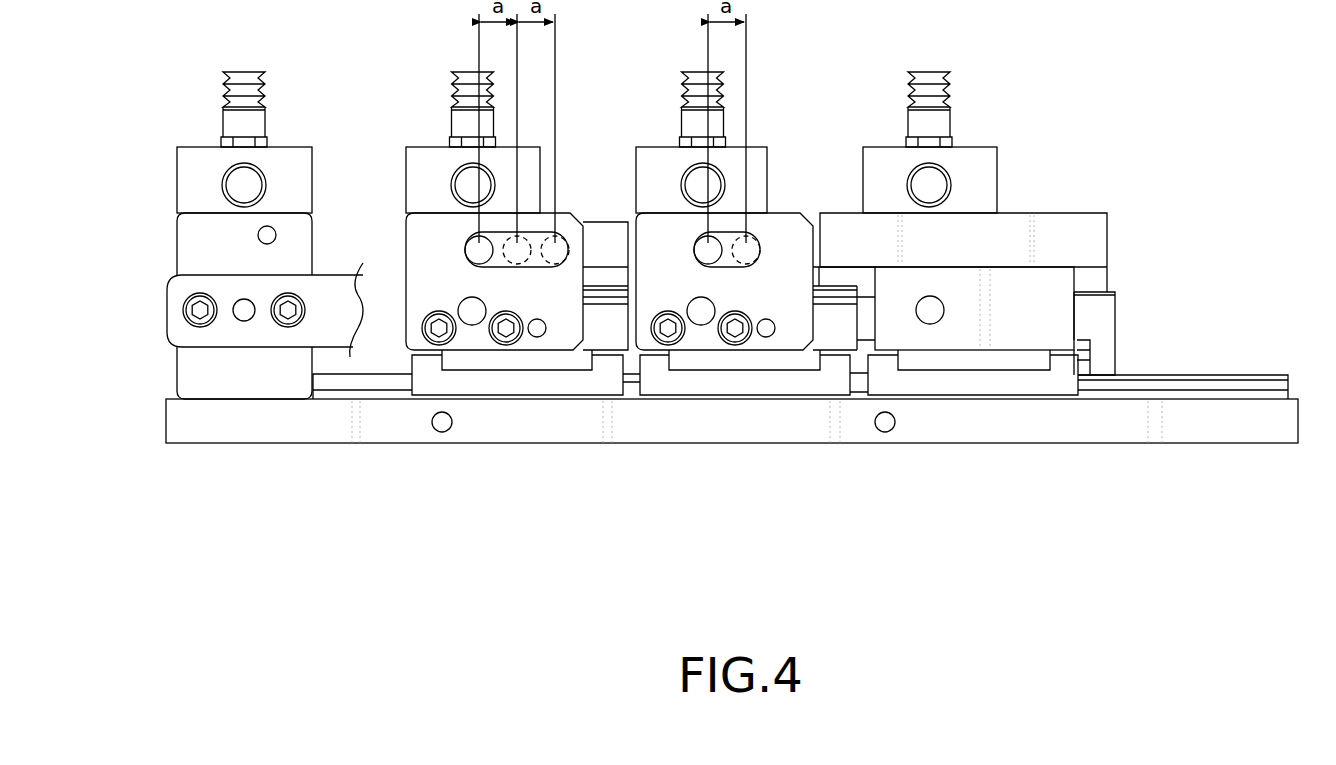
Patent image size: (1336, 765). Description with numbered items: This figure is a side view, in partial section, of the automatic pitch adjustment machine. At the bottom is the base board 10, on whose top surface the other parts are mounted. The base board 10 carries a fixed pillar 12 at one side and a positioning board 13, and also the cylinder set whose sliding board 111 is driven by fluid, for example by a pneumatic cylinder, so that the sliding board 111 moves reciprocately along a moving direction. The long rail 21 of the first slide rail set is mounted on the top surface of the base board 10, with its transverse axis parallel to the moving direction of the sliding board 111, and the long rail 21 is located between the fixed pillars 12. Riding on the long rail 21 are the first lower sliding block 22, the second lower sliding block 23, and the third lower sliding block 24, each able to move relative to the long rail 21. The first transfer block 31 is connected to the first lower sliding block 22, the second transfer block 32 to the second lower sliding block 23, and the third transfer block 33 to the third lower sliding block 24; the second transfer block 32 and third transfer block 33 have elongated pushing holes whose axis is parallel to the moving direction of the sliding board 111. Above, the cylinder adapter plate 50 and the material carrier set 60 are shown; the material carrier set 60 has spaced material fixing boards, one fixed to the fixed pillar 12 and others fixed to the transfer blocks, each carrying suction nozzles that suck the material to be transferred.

The base board 10 is at (1212, 433).
The fixed pillar 12 is at (193, 235).
The positioning board 13 is at (338, 340).
The long rail 21 is at (1232, 385).
The first lower sliding block 22 is at (923, 382).
The second lower sliding block 23 is at (788, 383).
The third lower sliding block 24 is at (508, 383).
The first transfer block 31 is at (993, 332).
The second transfer block 32 is at (834, 337).
The third transfer block 33 is at (602, 338).
The cylinder adapter plate 50 is at (1091, 223).
The material carrier set 60 is at (977, 123).
The sliding board 111 is at (1097, 279).